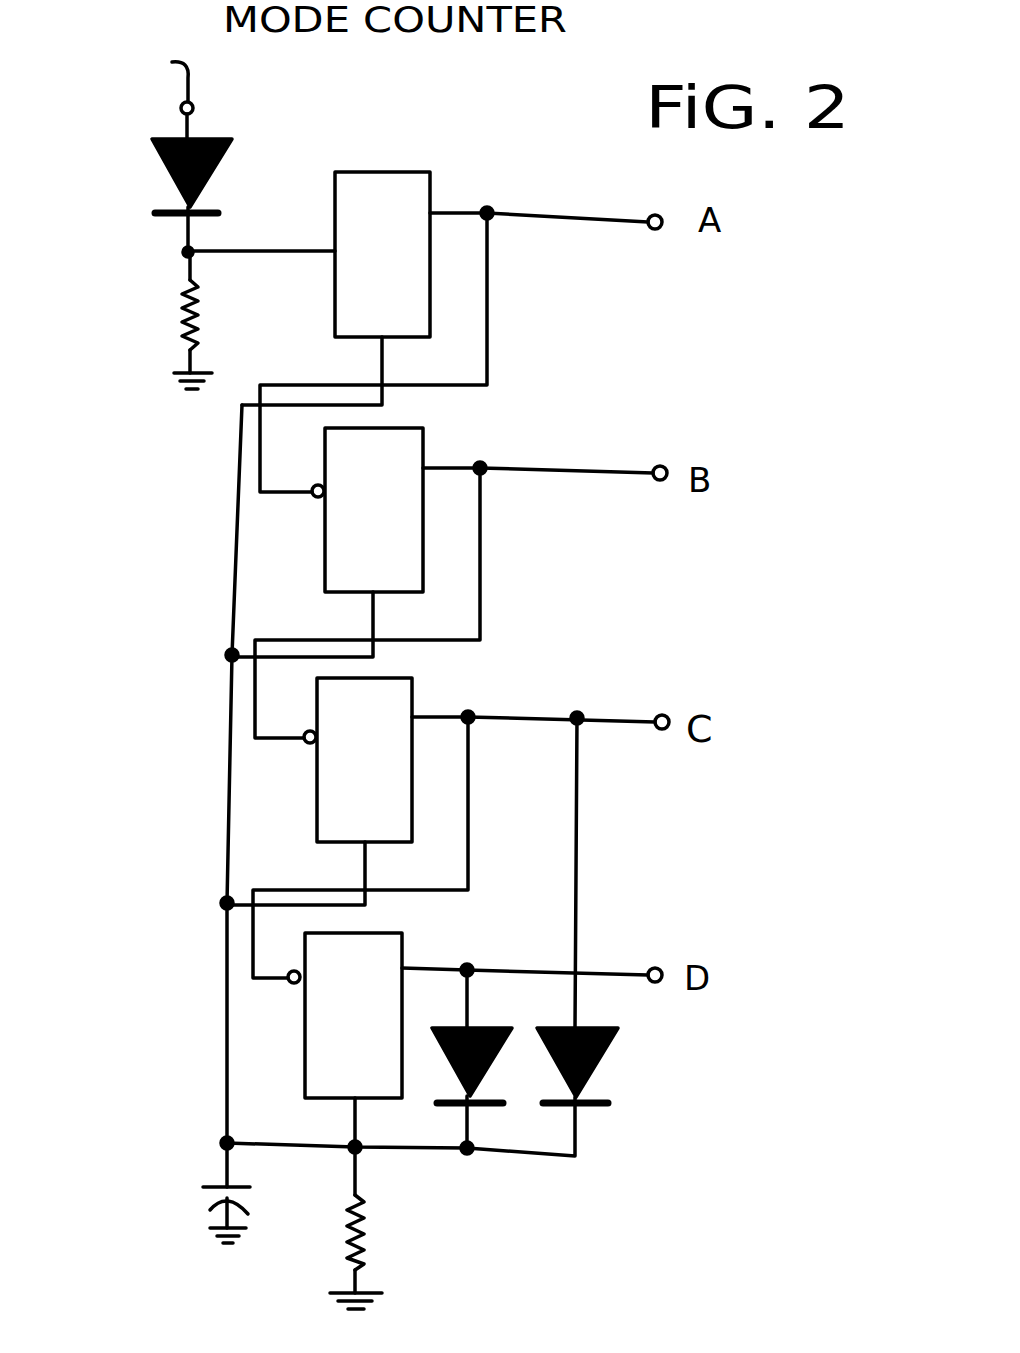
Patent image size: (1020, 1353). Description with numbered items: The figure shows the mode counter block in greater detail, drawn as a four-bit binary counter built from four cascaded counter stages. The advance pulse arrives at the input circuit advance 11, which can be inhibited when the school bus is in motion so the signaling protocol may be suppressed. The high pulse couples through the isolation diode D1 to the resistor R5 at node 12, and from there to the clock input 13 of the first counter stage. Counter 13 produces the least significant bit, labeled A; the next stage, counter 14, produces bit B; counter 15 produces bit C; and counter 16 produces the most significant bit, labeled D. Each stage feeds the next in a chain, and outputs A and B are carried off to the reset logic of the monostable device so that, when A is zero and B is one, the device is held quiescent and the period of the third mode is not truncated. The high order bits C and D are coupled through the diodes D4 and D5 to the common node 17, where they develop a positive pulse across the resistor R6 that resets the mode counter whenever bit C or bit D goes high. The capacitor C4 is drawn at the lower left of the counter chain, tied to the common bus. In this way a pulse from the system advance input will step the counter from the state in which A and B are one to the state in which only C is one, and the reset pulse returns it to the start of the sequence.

The input circuit advance 11 is at (159, 82).
The R5 node 12 is at (178, 258).
The counter 13 is at (368, 168).
The counter 14 is at (402, 405).
The counter 15 is at (396, 662).
The counter 16 is at (483, 1018).
The common return node 17 is at (368, 1158).
The isolation diode D1 is at (158, 190).
The diode D4 is at (514, 1008).
The diode D5 is at (592, 1022).
The resistor R5 is at (208, 320).
The resistor R6 is at (385, 1228).
The capacitor C4 is at (238, 1193).